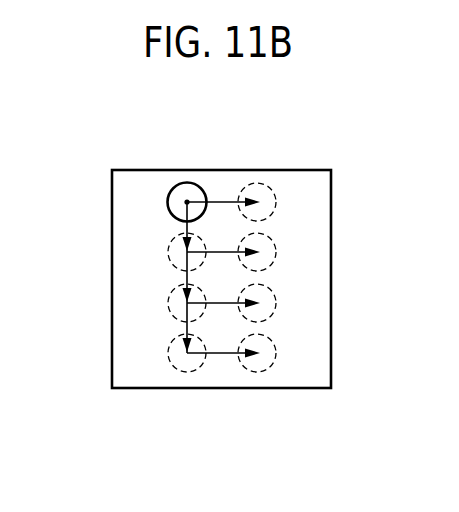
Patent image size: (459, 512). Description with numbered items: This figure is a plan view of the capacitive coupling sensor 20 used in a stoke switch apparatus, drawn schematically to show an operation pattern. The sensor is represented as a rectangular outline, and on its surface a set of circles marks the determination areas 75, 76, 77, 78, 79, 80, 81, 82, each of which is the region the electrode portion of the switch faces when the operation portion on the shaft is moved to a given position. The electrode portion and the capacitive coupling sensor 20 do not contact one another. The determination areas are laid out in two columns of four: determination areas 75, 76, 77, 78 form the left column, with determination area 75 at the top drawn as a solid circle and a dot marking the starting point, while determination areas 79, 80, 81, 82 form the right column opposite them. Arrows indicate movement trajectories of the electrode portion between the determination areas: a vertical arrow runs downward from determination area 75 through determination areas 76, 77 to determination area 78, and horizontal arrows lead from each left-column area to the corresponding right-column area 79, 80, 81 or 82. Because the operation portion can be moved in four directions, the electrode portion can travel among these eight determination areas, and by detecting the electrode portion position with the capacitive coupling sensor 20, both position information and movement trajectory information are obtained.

The capacitive coupling sensor 20 is at (272, 380).
The determination area 75 is at (187, 182).
The determination area 76 is at (168, 250).
The determination area 77 is at (168, 301).
The determination area 78 is at (168, 353).
The determination area 79 is at (275, 204).
The determination area 80 is at (275, 254).
The determination area 81 is at (275, 305).
The determination area 82 is at (275, 355).